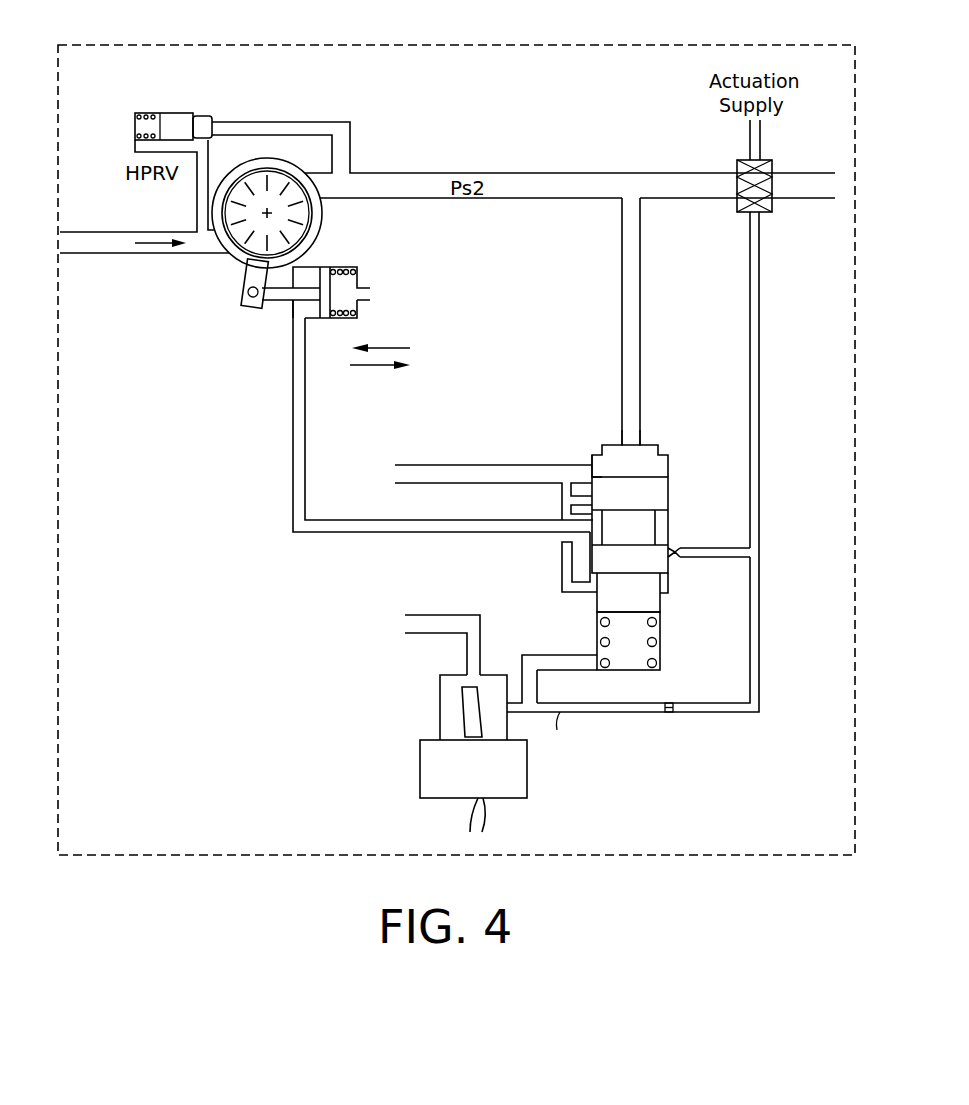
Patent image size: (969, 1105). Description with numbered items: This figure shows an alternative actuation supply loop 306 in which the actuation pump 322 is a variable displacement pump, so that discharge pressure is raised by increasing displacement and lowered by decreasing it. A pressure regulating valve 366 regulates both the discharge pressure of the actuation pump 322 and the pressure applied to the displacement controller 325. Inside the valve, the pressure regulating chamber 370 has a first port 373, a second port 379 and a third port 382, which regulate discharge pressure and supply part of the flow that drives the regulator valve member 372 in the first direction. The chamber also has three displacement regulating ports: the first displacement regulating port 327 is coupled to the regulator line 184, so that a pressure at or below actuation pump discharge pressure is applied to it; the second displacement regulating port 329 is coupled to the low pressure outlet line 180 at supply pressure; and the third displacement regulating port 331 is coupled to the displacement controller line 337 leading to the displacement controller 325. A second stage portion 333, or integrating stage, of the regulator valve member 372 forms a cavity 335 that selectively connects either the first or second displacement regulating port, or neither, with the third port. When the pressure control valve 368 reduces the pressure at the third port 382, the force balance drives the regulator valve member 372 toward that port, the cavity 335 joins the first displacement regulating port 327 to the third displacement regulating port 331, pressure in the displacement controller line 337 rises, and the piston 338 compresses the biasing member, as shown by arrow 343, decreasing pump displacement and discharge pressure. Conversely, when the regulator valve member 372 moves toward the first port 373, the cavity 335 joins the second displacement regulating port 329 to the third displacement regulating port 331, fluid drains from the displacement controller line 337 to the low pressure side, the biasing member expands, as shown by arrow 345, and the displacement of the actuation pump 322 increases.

The actuation supply loop 306 is at (655, 45).
The actuation pump 322 is at (238, 318).
The piston 338 is at (323, 267).
The displacement controller 325 is at (348, 267).
The arrow 345 is at (395, 347).
The arrow 343 is at (371, 365).
The displacement controller line 337 is at (293, 508).
The low pressure outlet line 180 is at (447, 485).
The second displacement regulating port 329 is at (590, 500).
The third displacement regulating port 331 is at (590, 532).
The second stage portion 333 is at (692, 462).
The cavity 335 is at (663, 520).
The pressure regulating chamber 370 is at (647, 462).
The first port 373 is at (632, 445).
The second port 379 is at (575, 470).
The first displacement regulating port 327 is at (672, 547).
The regulator valve member 372 is at (663, 600).
The pressure regulating valve 366 is at (702, 653).
The third port 382 is at (633, 673).
The pressure control valve 368 is at (392, 750).
The regulator line 184 is at (725, 712).